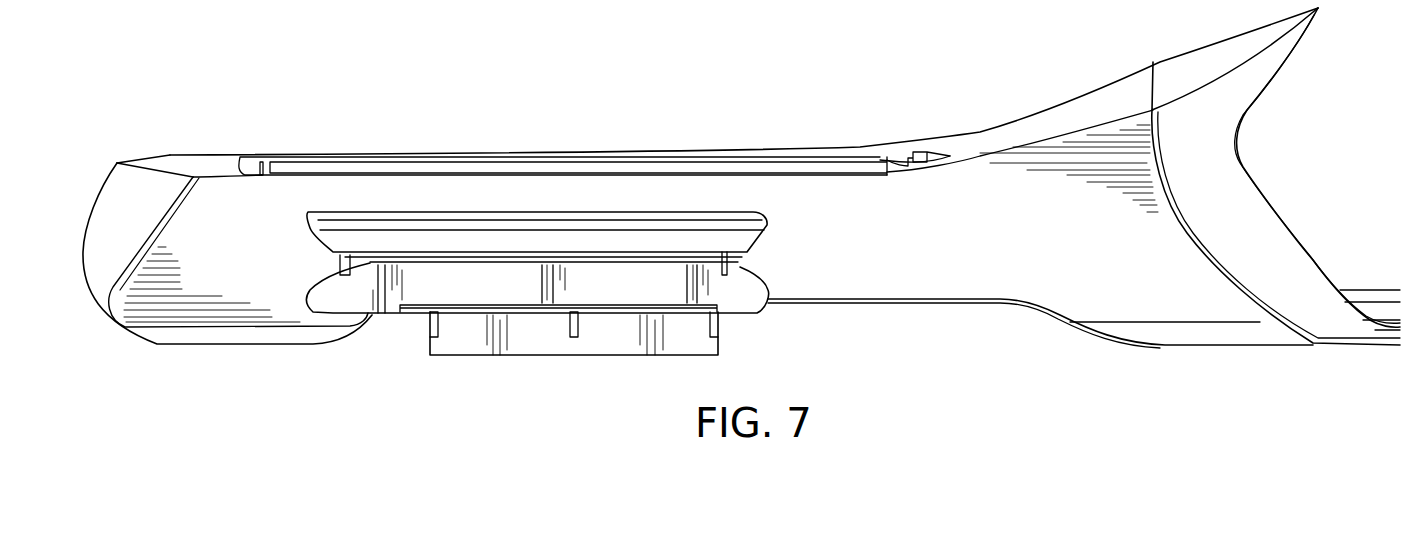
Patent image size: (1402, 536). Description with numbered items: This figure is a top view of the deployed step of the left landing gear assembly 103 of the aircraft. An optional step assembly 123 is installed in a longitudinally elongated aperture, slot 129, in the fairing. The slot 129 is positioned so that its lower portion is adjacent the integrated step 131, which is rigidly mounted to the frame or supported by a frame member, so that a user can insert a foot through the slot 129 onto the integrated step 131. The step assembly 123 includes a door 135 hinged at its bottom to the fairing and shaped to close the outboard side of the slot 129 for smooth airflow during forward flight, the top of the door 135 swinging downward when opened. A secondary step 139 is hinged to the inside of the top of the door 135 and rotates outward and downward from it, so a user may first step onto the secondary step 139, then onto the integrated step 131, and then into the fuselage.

The left landing gear assembly 103 is at (172, 350).
The step assembly 123 is at (574, 369).
The slot 129 is at (584, 196).
The integrated step 131 is at (436, 243).
The door 135 is at (757, 313).
The secondary step 139 is at (626, 358).